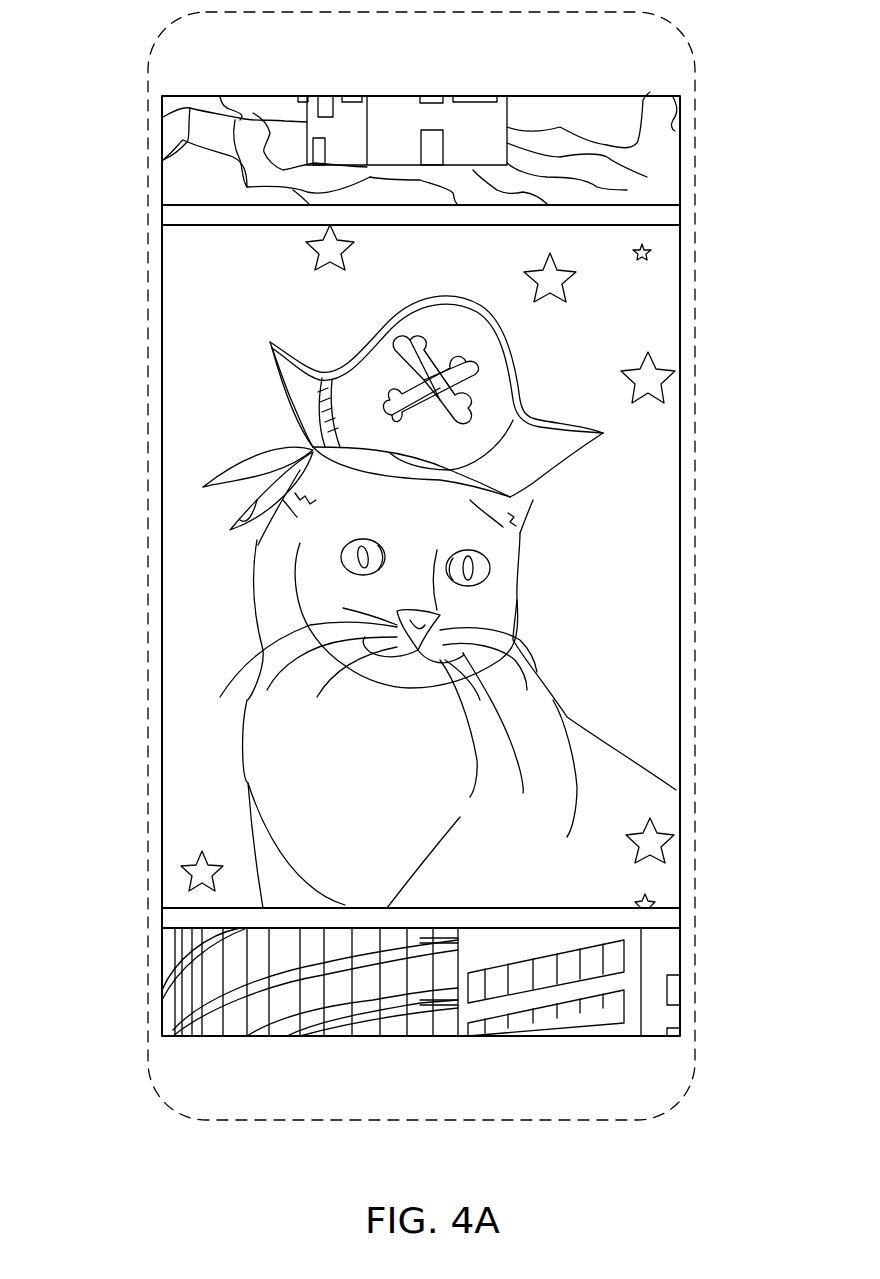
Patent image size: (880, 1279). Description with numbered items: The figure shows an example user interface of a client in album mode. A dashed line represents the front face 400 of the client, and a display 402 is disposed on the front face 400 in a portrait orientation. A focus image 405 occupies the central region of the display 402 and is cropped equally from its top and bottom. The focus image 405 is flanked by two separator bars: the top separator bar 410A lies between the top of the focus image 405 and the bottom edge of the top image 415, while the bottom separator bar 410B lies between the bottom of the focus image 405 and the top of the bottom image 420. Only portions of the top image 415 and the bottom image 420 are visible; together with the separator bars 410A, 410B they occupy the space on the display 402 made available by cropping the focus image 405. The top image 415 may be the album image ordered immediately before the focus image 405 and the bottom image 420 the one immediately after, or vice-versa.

The front face 400 is at (151, 60).
The display 402 is at (160, 148).
The focus image 405 is at (171, 527).
The top separator bar 410A is at (166, 217).
The bottom separator bar 410B is at (166, 916).
The top image 415 is at (672, 153).
The bottom image 420 is at (672, 985).